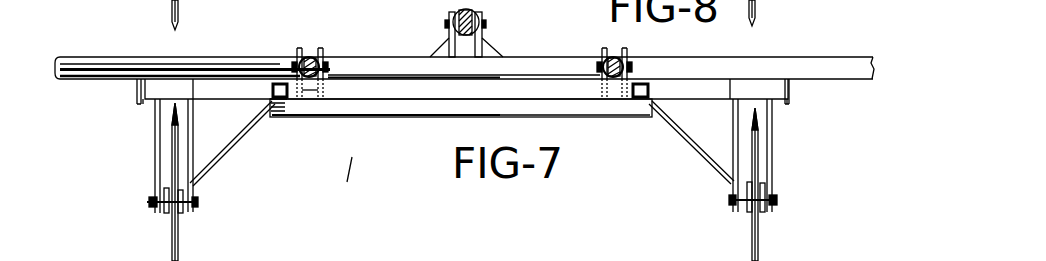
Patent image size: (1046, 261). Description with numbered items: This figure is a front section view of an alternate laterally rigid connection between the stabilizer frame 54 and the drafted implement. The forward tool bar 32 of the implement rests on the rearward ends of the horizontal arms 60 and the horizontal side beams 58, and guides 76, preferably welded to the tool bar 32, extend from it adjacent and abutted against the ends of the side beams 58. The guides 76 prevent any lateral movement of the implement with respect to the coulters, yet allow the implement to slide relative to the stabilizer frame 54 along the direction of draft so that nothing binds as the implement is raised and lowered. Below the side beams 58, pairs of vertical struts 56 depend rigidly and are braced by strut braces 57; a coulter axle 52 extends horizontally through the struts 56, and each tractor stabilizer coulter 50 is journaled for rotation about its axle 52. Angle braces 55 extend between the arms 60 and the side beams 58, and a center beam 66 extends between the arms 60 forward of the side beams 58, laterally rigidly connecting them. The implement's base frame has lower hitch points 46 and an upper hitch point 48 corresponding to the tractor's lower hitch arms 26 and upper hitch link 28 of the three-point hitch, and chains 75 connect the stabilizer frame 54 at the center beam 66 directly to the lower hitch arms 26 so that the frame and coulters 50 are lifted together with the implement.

The lower hitch arms 26 is at (303, 50).
The upper hitch link 28 is at (468, 9).
The forward tool bar 32 is at (201, 57).
The lower hitch points 46 is at (326, 68).
The upper hitch point 48 is at (487, 24).
The tractor stabilizer coulter 50 is at (180, 238).
The coulter axle 52 is at (164, 210).
The stabilizer frame 54 is at (344, 181).
The angle braces 55 is at (220, 90).
The vertical struts 56 is at (193, 134).
The strut braces 57 is at (228, 149).
The horizontal side beams 58 is at (143, 103).
The horizontal arms 60 is at (279, 112).
The center beam 66 is at (590, 110).
The chains 75 is at (325, 90).
The guides 76 is at (137, 93).